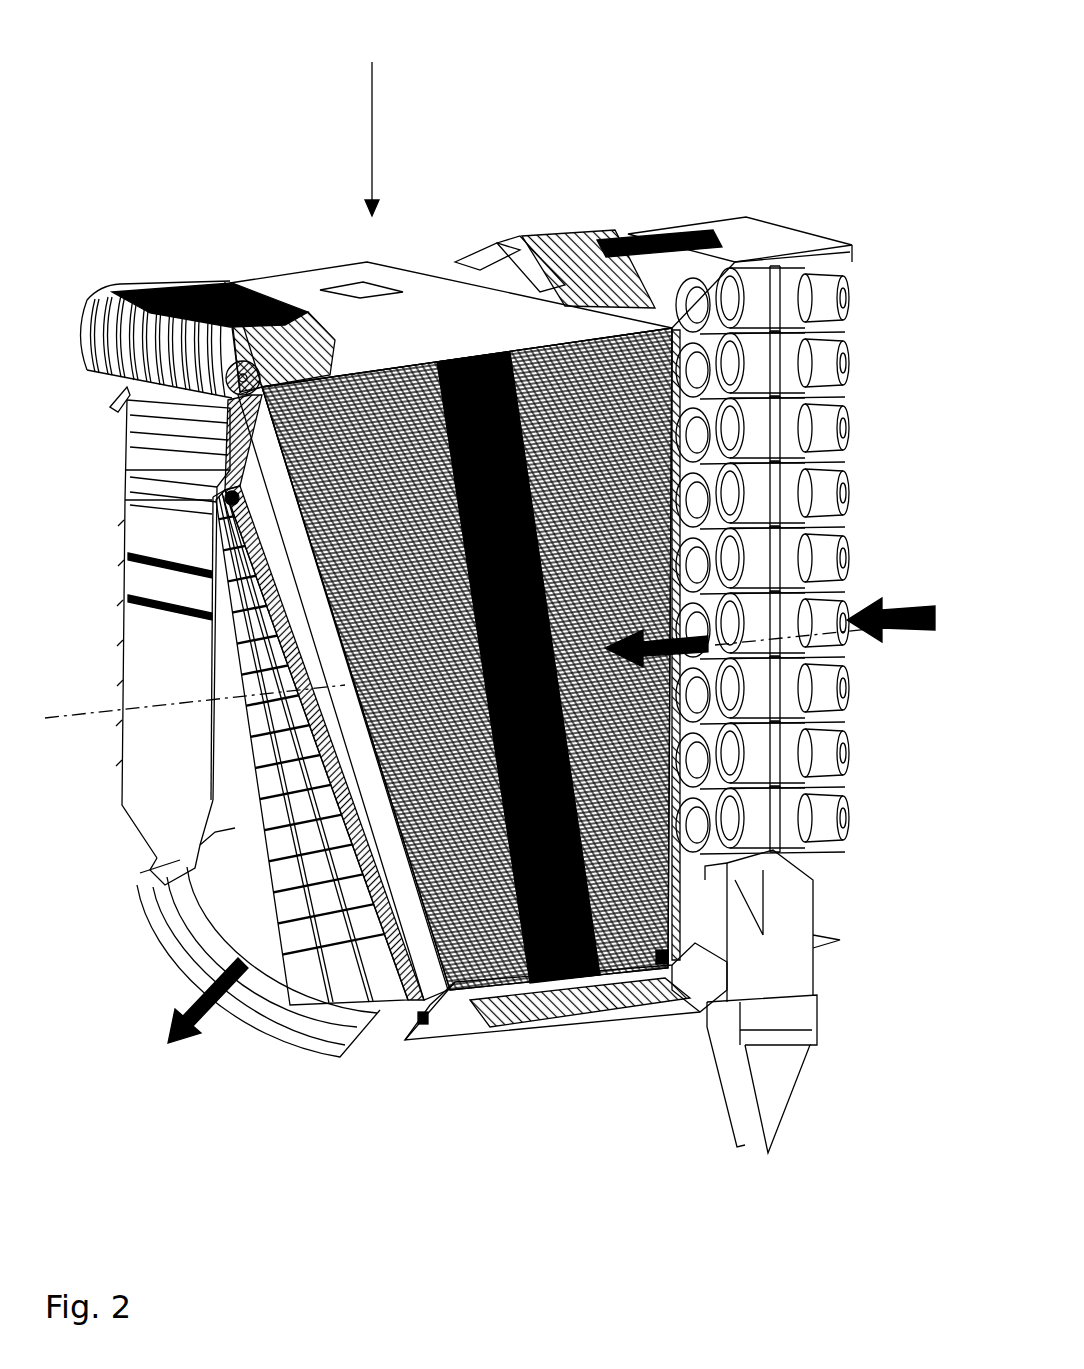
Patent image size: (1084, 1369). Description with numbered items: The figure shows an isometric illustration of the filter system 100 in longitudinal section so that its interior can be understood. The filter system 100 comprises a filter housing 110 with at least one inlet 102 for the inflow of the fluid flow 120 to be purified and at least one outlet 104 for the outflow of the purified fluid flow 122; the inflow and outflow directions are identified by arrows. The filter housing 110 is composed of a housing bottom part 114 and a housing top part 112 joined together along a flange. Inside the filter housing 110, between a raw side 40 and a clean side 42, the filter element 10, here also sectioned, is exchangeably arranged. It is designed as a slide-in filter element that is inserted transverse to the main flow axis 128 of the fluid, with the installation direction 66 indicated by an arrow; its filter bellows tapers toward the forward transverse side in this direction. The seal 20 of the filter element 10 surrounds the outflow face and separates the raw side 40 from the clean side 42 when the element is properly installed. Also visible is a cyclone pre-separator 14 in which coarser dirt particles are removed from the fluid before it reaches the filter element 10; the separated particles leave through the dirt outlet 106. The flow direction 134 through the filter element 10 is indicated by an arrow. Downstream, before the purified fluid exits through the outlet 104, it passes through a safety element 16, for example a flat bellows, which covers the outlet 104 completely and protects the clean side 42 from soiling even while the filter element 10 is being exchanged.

The filter element 10 is at (520, 340).
The cyclone pre-separator 14 is at (836, 432).
The safety element 16 is at (397, 993).
The seal 20 is at (235, 296).
The raw side 40 is at (780, 613).
The clean side 42 is at (245, 890).
The installation direction 66 is at (372, 103).
The filter system 100 is at (750, 96).
The inlet 102 is at (838, 514).
The outlet 104 is at (155, 880).
The dirt outlet 106 is at (793, 1110).
The filter housing 110 is at (428, 268).
The housing top part 112 is at (630, 232).
The housing bottom part 114 is at (245, 283).
The fluid flow 120 is at (903, 600).
The purified fluid flow 122 is at (195, 988).
The main flow axis 128 is at (77, 713).
The flow direction 134 is at (680, 660).